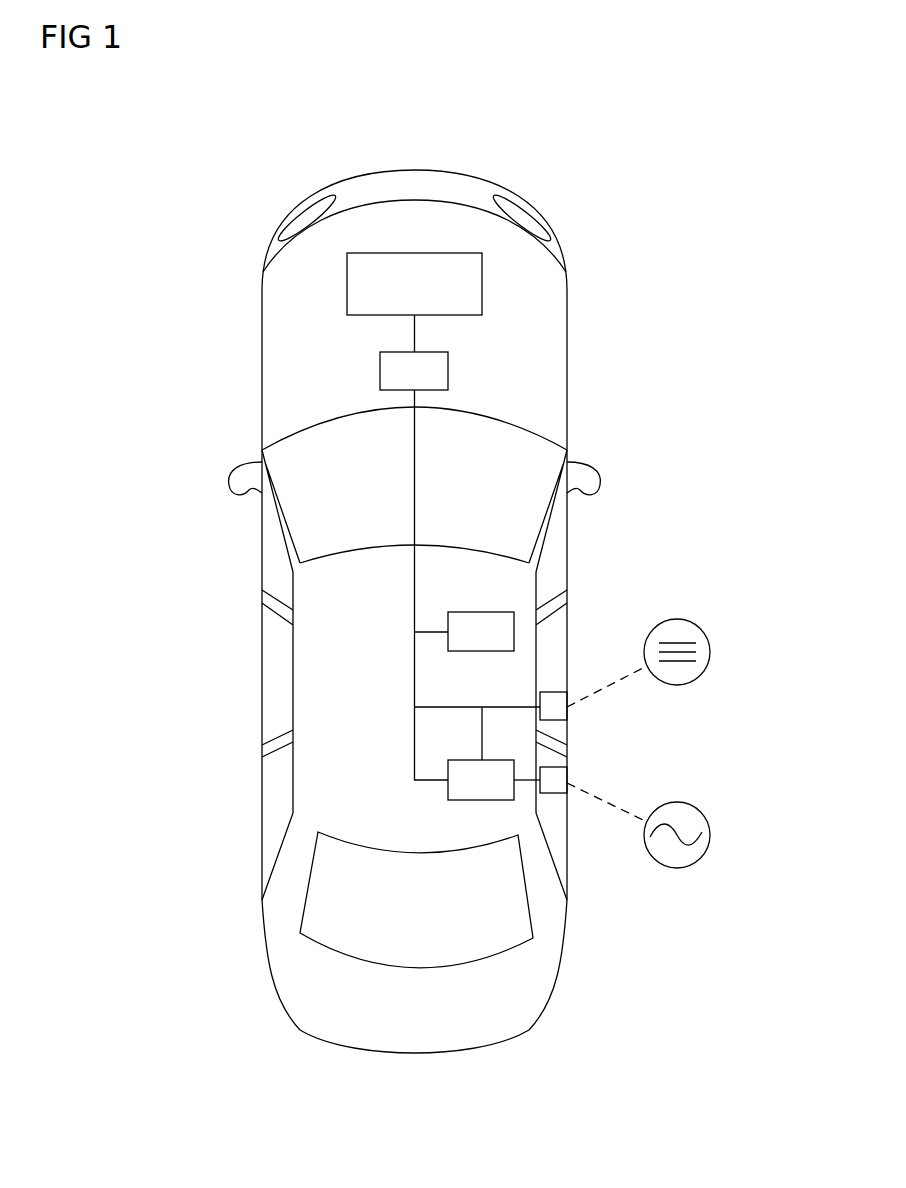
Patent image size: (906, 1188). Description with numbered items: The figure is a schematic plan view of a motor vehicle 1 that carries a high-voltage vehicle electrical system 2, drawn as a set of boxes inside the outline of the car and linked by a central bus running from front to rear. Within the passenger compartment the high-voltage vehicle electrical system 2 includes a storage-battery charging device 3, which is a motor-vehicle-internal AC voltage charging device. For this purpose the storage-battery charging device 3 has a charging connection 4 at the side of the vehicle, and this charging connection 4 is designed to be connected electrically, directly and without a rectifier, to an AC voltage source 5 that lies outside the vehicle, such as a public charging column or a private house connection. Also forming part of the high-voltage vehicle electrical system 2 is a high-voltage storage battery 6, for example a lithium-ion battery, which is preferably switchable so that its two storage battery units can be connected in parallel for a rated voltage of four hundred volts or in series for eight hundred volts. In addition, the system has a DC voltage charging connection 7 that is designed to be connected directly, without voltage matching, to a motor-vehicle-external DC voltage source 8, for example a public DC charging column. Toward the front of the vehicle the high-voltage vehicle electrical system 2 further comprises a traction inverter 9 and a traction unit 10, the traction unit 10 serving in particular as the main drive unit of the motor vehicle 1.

The motor vehicle 1 is at (567, 300).
The high-voltage vehicle electrical system 2 is at (500, 378).
The storage-battery charging device 3 is at (497, 760).
The charging connection 4 is at (558, 778).
The AC voltage source 5 is at (710, 833).
The high-voltage storage battery 6 is at (514, 632).
The DC voltage charging connection 7 is at (557, 708).
The DC voltage source 8 is at (710, 652).
The traction inverter 9 is at (380, 370).
The traction unit 10 is at (347, 286).